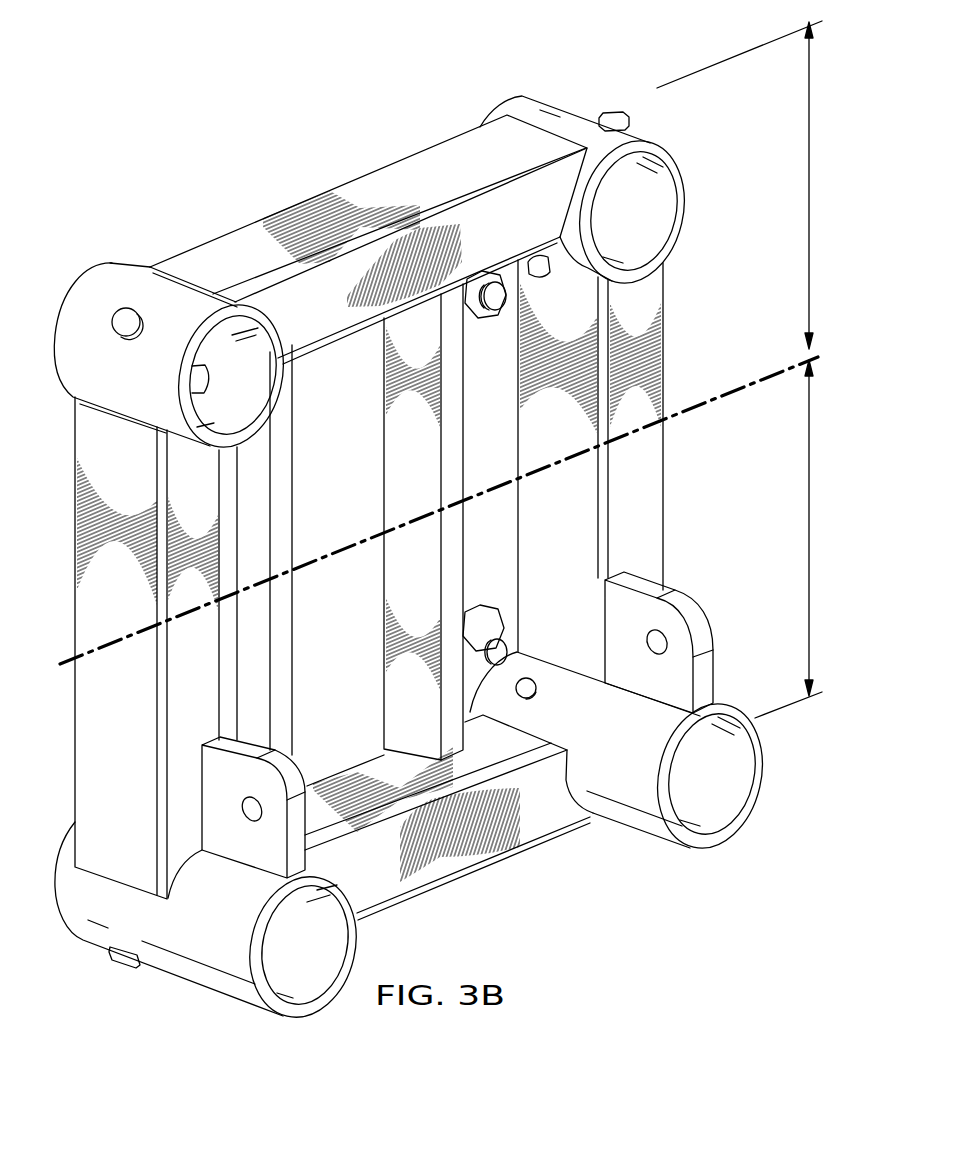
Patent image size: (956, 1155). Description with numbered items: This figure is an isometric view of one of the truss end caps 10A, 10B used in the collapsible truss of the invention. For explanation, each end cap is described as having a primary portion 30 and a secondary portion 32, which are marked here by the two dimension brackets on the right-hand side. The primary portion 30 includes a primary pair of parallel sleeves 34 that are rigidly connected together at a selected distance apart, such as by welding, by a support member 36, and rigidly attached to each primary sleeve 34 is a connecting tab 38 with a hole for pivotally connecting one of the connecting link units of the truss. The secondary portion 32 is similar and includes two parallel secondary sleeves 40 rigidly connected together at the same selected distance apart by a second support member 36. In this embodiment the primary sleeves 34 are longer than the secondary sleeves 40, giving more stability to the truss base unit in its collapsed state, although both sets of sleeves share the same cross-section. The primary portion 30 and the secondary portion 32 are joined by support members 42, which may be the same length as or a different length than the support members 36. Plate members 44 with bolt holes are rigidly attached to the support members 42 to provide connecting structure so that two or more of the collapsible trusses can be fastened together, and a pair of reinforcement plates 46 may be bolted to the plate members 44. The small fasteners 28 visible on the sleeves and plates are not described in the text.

The truss end cap 10A is at (243, 134).
The truss end cap 10B is at (260, 163).
The fastener 28 is at (120, 312).
The primary portion 30 is at (810, 548).
The secondary portion 32 is at (810, 190).
The primary sleeve 34 is at (211, 975).
The support member 36 is at (385, 182).
The connecting tab 38 is at (253, 855).
The secondary sleeve 40 is at (90, 297).
The support member 42 is at (87, 708).
The plate member 44 is at (228, 643).
The reinforcement plate 46 is at (397, 446).